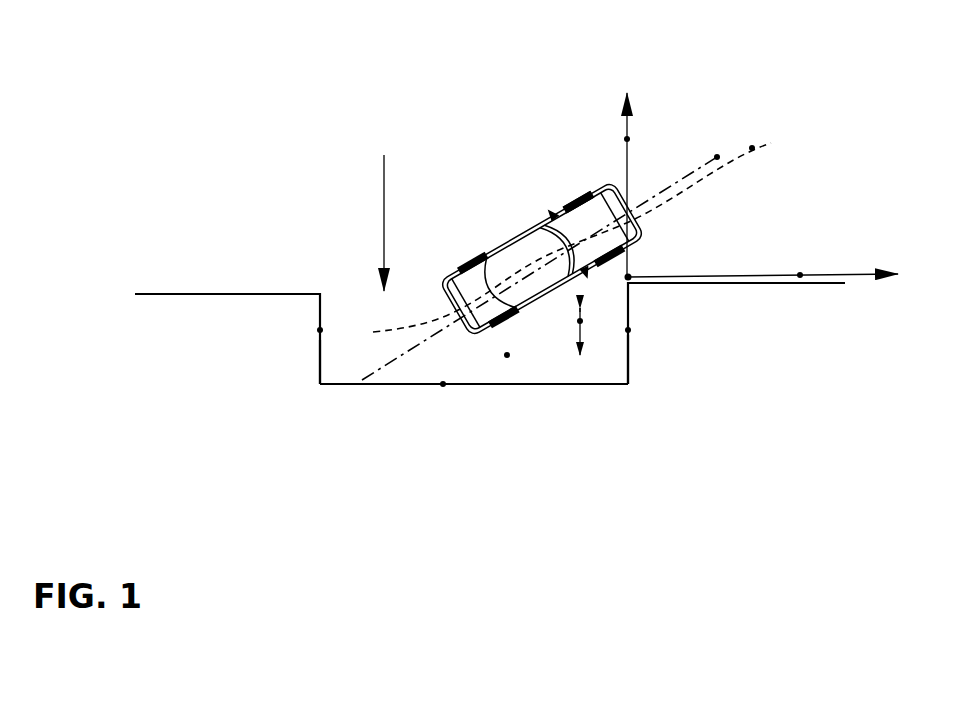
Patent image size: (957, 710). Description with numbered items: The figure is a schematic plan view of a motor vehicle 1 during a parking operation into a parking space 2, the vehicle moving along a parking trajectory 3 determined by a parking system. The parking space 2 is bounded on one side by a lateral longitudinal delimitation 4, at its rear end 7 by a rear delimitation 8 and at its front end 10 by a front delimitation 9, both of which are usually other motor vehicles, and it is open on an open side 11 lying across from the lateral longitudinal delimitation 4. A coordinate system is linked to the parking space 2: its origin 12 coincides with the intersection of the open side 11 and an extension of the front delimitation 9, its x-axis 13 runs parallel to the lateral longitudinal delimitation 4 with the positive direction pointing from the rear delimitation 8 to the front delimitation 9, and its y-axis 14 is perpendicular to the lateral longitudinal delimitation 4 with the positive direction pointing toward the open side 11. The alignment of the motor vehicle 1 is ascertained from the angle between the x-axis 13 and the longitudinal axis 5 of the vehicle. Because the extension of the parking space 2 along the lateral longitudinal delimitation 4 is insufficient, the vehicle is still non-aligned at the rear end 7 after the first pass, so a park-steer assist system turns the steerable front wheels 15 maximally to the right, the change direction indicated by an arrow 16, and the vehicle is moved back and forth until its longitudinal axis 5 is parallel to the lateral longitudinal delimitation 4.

The motor vehicle 1 is at (505, 250).
The parking space 2 is at (507, 355).
The parking trajectory 3 is at (752, 148).
The lateral longitudinal delimitation 4 is at (443, 384).
The longitudinal axis 5 is at (717, 157).
The rear end 7 is at (327, 346).
The rear delimitation 8 is at (320, 330).
The front delimitation 9 is at (628, 330).
The front end 10 is at (623, 333).
The open side 11 is at (386, 209).
The origin 12 is at (628, 277).
The x-axis 13 is at (800, 275).
The y-axis 14 is at (627, 139).
The steerable front wheels 15 is at (570, 203).
The arrow 16 is at (580, 321).